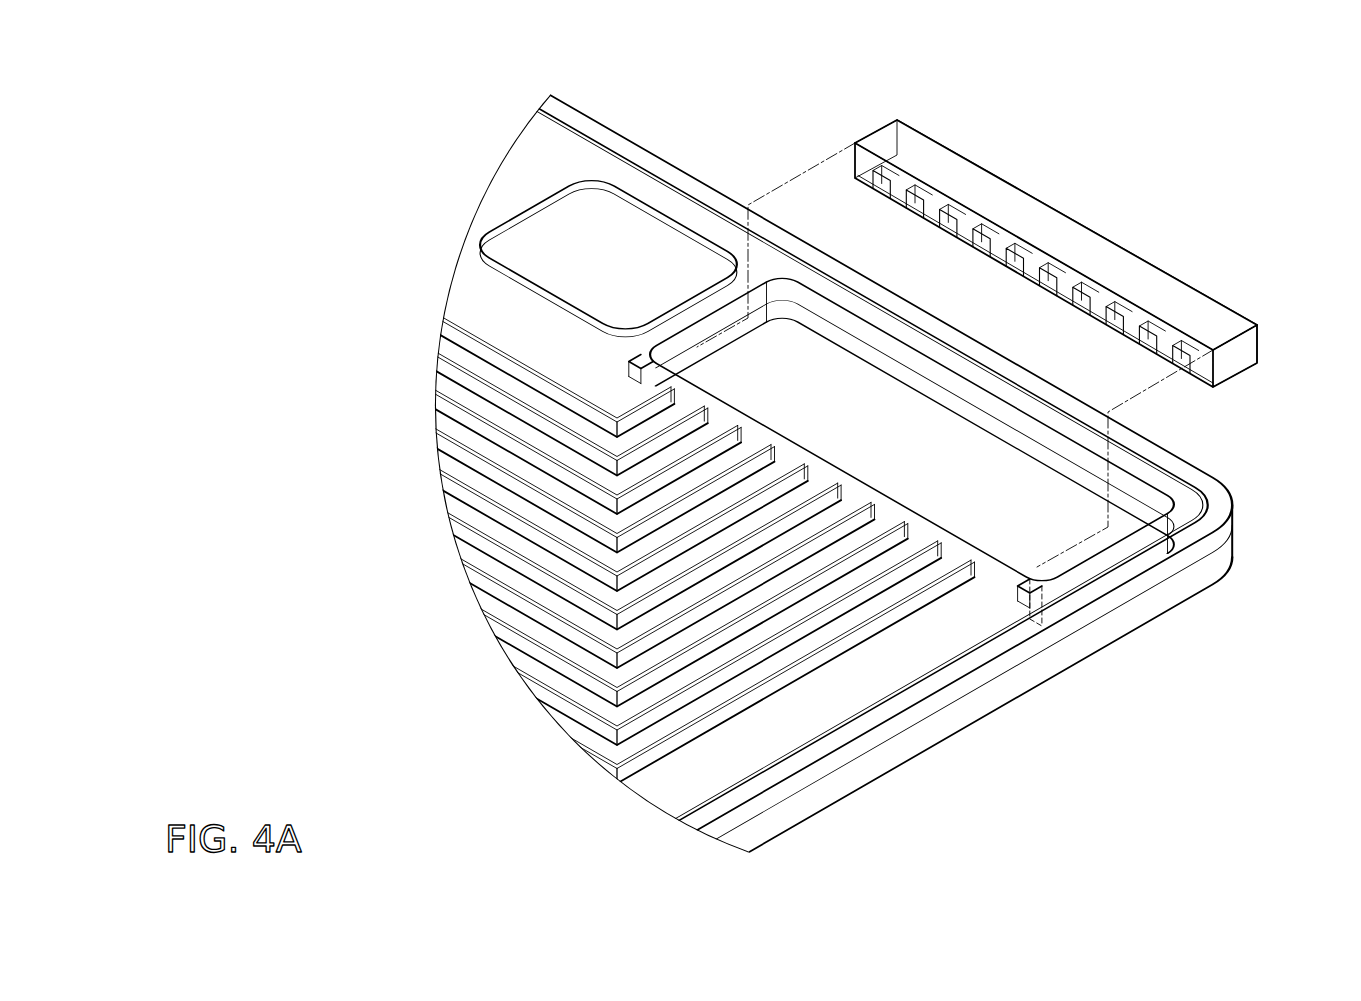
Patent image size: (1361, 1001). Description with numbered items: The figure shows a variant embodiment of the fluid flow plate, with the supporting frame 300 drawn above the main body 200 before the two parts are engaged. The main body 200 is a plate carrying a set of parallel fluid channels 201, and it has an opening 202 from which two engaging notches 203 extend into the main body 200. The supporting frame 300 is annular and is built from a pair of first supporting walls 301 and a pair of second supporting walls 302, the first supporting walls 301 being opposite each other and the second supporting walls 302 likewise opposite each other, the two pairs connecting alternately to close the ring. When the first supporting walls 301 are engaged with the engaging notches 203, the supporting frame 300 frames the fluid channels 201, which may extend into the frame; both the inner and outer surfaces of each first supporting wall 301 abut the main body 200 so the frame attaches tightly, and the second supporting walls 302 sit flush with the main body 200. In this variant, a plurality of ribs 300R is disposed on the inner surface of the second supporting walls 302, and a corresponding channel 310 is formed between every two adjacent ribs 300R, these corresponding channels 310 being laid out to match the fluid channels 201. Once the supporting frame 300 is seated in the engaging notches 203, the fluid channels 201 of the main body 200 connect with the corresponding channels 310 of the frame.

The main body 200 is at (1212, 478).
The fluid channels 201 is at (867, 627).
The opening 202 is at (945, 462).
The engaging notches 203 is at (667, 380).
The supporting frame 300 is at (1020, 185).
The ribs 300R is at (1032, 258).
The first supporting walls 301 is at (856, 180).
The second supporting walls 302 is at (1220, 296).
The corresponding channels 310 is at (1060, 270).